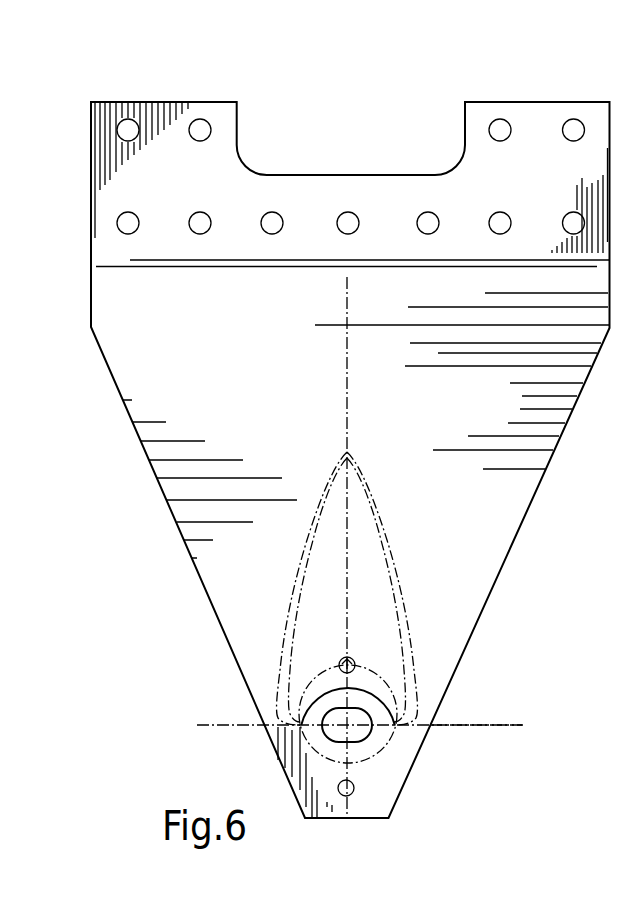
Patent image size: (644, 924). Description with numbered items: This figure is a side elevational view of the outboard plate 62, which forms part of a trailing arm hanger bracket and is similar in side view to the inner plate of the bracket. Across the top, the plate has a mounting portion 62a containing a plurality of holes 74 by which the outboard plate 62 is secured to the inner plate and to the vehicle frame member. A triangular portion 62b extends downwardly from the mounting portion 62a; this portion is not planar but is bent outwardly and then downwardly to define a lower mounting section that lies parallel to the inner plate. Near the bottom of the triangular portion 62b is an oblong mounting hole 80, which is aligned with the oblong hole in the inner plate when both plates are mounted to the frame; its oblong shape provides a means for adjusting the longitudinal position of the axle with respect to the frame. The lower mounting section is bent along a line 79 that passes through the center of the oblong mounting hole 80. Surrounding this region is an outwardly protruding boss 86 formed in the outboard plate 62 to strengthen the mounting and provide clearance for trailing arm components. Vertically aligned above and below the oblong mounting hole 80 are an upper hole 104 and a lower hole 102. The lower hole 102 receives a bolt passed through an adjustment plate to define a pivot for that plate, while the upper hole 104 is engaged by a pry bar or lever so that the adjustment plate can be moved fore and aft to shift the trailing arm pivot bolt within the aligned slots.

The outboard plate 62 is at (147, 531).
The mounting portion 62a is at (572, 167).
The triangular portion 62b is at (333, 398).
The holes 74 is at (274, 220).
The bend line 79 is at (507, 723).
The oblong mounting hole 80 is at (356, 711).
The outwardly protruding boss 86 is at (388, 552).
The lower hole 102 is at (354, 790).
The upper hole 104 is at (356, 665).